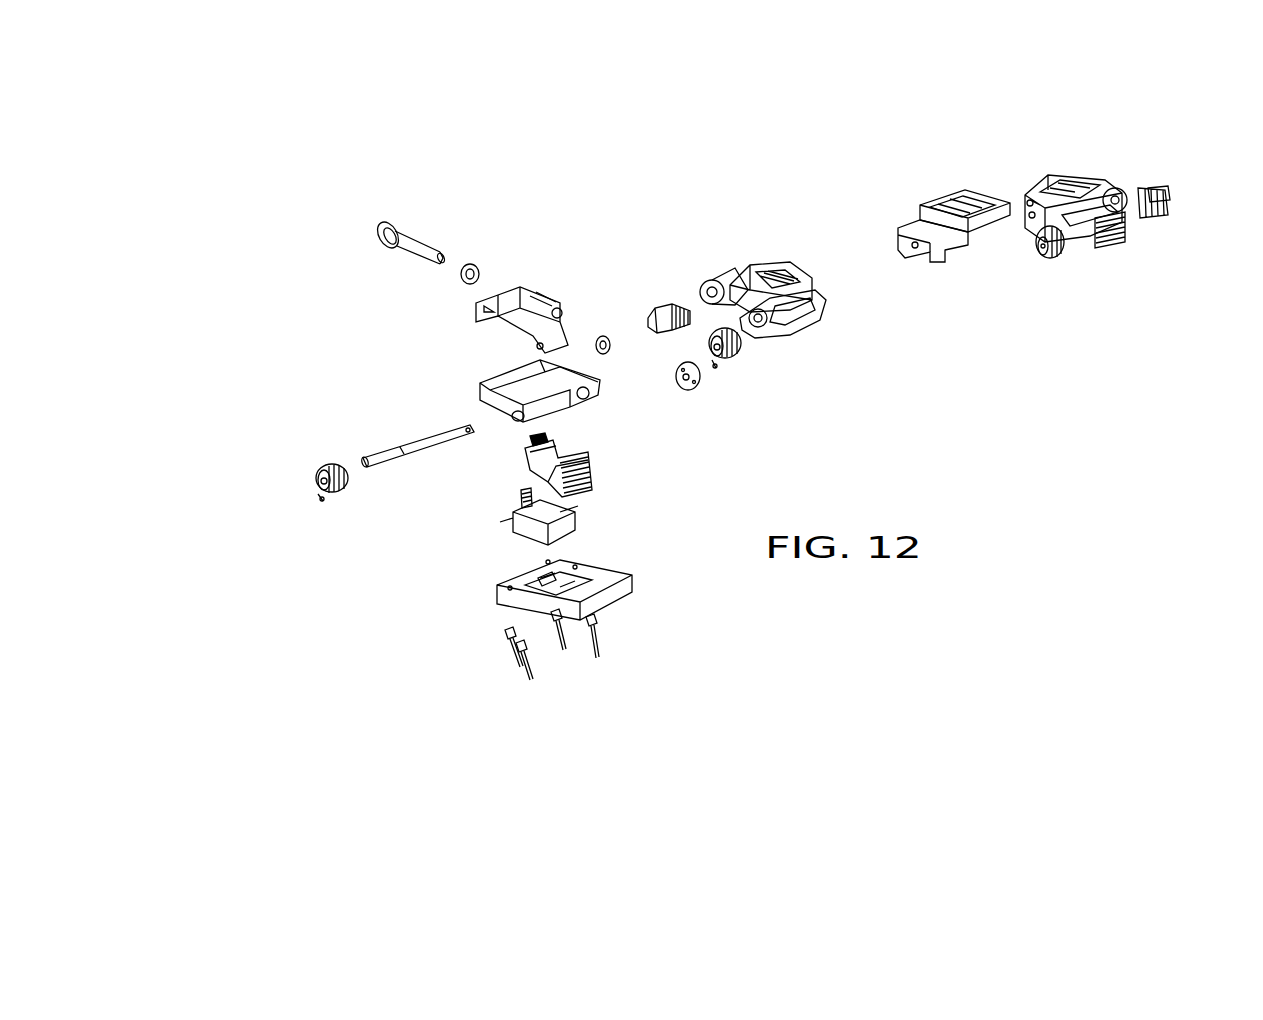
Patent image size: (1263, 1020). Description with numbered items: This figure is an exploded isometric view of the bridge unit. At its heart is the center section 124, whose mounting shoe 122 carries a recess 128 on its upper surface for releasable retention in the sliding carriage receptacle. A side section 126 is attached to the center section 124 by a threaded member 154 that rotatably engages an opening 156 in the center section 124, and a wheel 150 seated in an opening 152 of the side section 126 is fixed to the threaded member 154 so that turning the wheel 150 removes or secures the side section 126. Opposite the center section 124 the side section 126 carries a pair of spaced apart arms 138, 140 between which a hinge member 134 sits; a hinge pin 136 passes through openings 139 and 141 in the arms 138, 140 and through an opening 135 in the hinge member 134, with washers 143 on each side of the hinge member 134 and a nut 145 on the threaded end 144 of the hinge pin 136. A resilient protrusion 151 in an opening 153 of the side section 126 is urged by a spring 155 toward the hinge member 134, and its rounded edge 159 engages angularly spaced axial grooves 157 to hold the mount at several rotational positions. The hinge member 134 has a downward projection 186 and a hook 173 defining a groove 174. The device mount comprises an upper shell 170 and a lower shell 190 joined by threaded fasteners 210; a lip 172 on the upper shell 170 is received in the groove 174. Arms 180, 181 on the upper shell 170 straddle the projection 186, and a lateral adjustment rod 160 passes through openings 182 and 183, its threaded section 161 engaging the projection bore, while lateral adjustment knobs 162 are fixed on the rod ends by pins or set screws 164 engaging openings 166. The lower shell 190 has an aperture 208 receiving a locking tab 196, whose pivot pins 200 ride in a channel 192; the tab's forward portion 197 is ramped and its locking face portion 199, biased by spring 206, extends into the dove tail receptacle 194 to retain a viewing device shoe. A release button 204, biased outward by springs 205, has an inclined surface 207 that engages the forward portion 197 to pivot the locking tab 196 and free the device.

The mounting shoe 122 is at (987, 203).
The center section 124 is at (905, 222).
The side section 126 is at (790, 306).
The recess 128 is at (952, 213).
The hinge member 134 is at (522, 293).
The opening 135 is at (530, 334).
The hinge pin 136 is at (408, 238).
The arm 138 is at (710, 283).
The opening 139 is at (713, 280).
The arm 140 is at (747, 325).
The opening 141 is at (772, 324).
The washer 143 is at (470, 264).
The threaded end 144 is at (439, 249).
The nut 145 is at (688, 388).
The wheel 150 is at (768, 278).
The resilient protrusion 151 is at (658, 310).
The opening 152 is at (759, 273).
The opening 153 is at (737, 283).
The threaded member 154 is at (795, 285).
The spring 155 is at (670, 302).
The opening 156 is at (930, 247).
The axial grooves 157 is at (563, 307).
The rounded edge 159 is at (662, 325).
The lateral adjustment rod 160 is at (380, 473).
The threaded section 161 is at (417, 447).
The lateral adjustment knob 162 is at (320, 470).
The pin or set screw 164 is at (322, 497).
The opening 166 is at (470, 427).
The upper shell 170 is at (516, 382).
The lip 172 is at (480, 372).
The hook 173 is at (476, 312).
The groove 174 is at (482, 320).
The arm 180 is at (533, 410).
The arm 181 is at (592, 385).
The opening 182 is at (478, 392).
The opening 183 is at (573, 398).
The downward projection 186 is at (562, 337).
The lower shell 190 is at (603, 577).
The channel 192 is at (510, 603).
The dove tail receptacle 194 is at (583, 602).
The locking tab 196 is at (520, 533).
The forward portion 197 is at (560, 515).
The locking face portion 199 is at (512, 525).
The pivot pin 200 is at (513, 523).
The release button 204 is at (585, 477).
The spring 205 is at (532, 440).
The spring 206 is at (527, 500).
The inclined surface 207 is at (533, 463).
The aperture 208 is at (545, 575).
The threaded fastener 210 is at (517, 665).